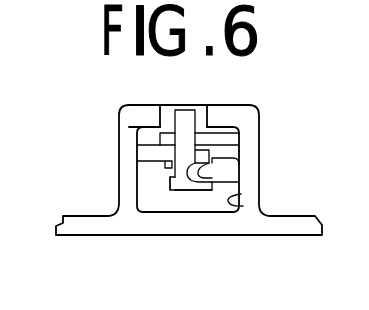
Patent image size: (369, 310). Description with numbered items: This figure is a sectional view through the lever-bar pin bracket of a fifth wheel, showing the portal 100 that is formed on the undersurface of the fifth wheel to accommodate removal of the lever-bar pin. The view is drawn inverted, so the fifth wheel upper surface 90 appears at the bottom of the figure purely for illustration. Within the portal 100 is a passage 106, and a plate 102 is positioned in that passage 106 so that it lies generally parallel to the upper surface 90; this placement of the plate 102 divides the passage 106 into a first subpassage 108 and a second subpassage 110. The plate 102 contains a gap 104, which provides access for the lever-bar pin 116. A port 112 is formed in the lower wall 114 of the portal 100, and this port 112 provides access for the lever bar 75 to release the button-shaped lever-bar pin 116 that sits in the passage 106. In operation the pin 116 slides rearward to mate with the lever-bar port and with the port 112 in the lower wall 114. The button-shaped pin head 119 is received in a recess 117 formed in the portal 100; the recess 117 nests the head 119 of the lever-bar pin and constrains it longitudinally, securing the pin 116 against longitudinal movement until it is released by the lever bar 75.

The fifth wheel upper surface 90 is at (279, 238).
The portal 100 is at (262, 117).
The plate 102 is at (149, 150).
The gap 104 is at (241, 194).
The passage 106 is at (148, 137).
The first subpassage 108 is at (259, 198).
The second subpassage 110 is at (241, 137).
The port 112 is at (195, 105).
The lower wall 114 is at (160, 112).
The lever-bar pin 116 is at (173, 192).
The recess 117 is at (168, 182).
The pin head 119 is at (186, 192).
The lever bar 75 is at (216, 135).